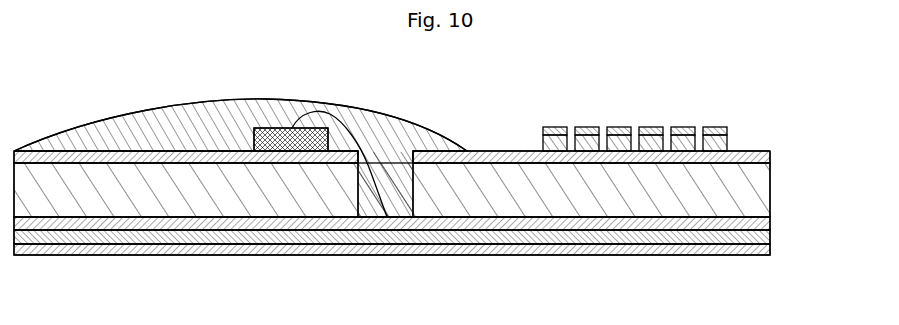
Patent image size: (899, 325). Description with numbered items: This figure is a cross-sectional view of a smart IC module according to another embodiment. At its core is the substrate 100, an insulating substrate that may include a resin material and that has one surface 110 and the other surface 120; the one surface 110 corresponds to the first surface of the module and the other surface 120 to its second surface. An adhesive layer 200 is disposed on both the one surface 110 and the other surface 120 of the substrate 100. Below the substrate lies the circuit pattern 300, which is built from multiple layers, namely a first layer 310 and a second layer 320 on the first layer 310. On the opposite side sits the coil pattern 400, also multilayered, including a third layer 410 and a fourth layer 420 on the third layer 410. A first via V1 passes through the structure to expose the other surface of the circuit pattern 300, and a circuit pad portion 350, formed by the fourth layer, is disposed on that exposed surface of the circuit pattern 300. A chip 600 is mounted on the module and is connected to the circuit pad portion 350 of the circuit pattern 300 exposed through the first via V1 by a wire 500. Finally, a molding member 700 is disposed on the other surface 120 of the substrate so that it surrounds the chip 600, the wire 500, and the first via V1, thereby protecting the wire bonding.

The substrate 100 is at (772, 190).
The one surface 110 is at (665, 220).
The other surface 120 is at (508, 162).
The adhesive layer 200 is at (772, 155).
The circuit pattern 300 is at (443, 253).
The first layer 310 is at (772, 240).
The second layer 320 is at (772, 252).
The circuit pad portion 350 is at (385, 218).
The coil pattern 400 is at (686, 123).
The third layer 410 is at (730, 145).
The fourth layer 420 is at (732, 132).
The wire 500 is at (328, 110).
The chip 600 is at (252, 138).
The molding member 700 is at (146, 118).
The first via V1 is at (394, 174).